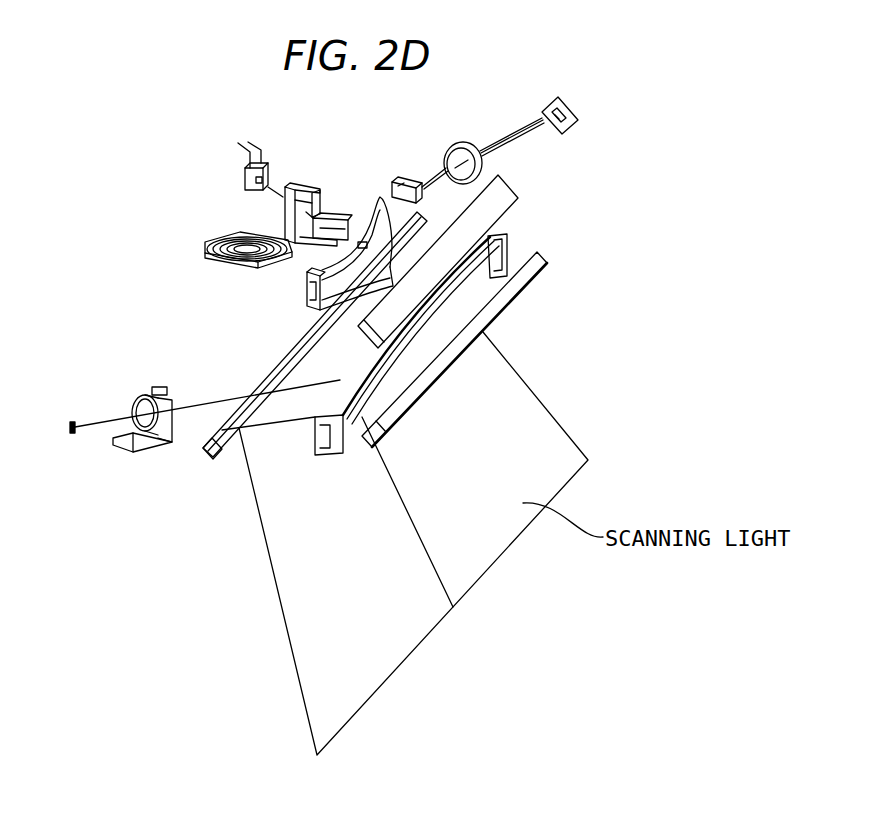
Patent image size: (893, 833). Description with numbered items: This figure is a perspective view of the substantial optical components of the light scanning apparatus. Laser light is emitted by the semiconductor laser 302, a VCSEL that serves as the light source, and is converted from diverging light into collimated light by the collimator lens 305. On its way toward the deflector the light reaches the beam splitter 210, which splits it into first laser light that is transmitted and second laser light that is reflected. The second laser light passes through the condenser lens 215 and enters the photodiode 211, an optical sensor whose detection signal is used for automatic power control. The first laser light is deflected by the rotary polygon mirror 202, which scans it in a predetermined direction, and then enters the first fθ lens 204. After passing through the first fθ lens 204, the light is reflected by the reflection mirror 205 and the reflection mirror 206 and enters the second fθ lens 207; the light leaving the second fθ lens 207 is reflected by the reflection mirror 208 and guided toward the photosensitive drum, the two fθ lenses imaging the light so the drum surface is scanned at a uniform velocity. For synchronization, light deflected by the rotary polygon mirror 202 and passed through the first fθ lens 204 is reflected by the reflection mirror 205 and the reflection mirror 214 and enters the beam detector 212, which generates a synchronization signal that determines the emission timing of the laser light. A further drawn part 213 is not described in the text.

The rotary polygon mirror 202 is at (205, 243).
The first fθ lens 204 is at (373, 218).
The reflection mirror 205 is at (505, 203).
The reflection mirror 206 is at (505, 297).
The second fθ lens 207 is at (275, 367).
The reflection mirror 208 is at (205, 453).
The beam splitter 210 is at (333, 215).
The photodiode 211 is at (245, 177).
The beam detector 212 is at (72, 437).
The sensor lens holder 213 is at (148, 393).
The reflection mirror 214 is at (420, 385).
The condenser lens 215 is at (292, 185).
The semiconductor laser 302 is at (568, 130).
The collimator lens 305 is at (463, 142).